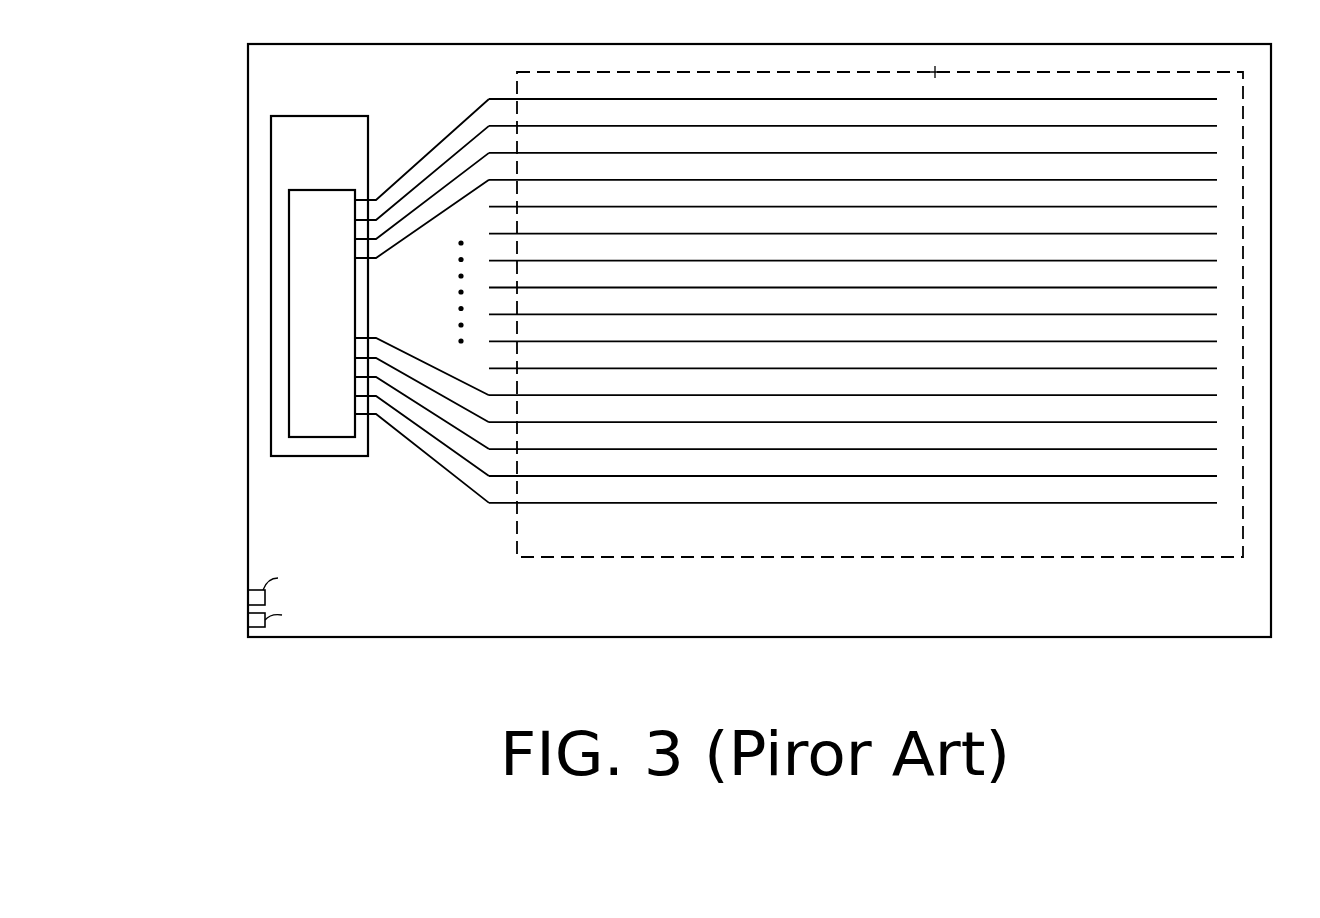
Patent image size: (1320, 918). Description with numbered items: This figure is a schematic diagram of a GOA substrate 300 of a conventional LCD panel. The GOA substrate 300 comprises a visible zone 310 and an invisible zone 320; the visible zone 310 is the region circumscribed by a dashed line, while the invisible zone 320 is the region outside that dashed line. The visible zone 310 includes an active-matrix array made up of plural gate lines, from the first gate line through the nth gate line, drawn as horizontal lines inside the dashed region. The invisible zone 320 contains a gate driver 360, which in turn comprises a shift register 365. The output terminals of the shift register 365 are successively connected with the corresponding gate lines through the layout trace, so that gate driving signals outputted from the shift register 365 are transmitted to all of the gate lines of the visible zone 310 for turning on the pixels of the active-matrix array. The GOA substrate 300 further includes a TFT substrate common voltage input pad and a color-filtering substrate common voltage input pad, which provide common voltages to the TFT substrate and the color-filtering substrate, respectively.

The GOA substrate 300 is at (1120, 44).
The visible zone 310 is at (940, 58).
The invisible zone 320 is at (827, 53).
The gate driver 360 is at (300, 116).
The shift register 365 is at (289, 232).